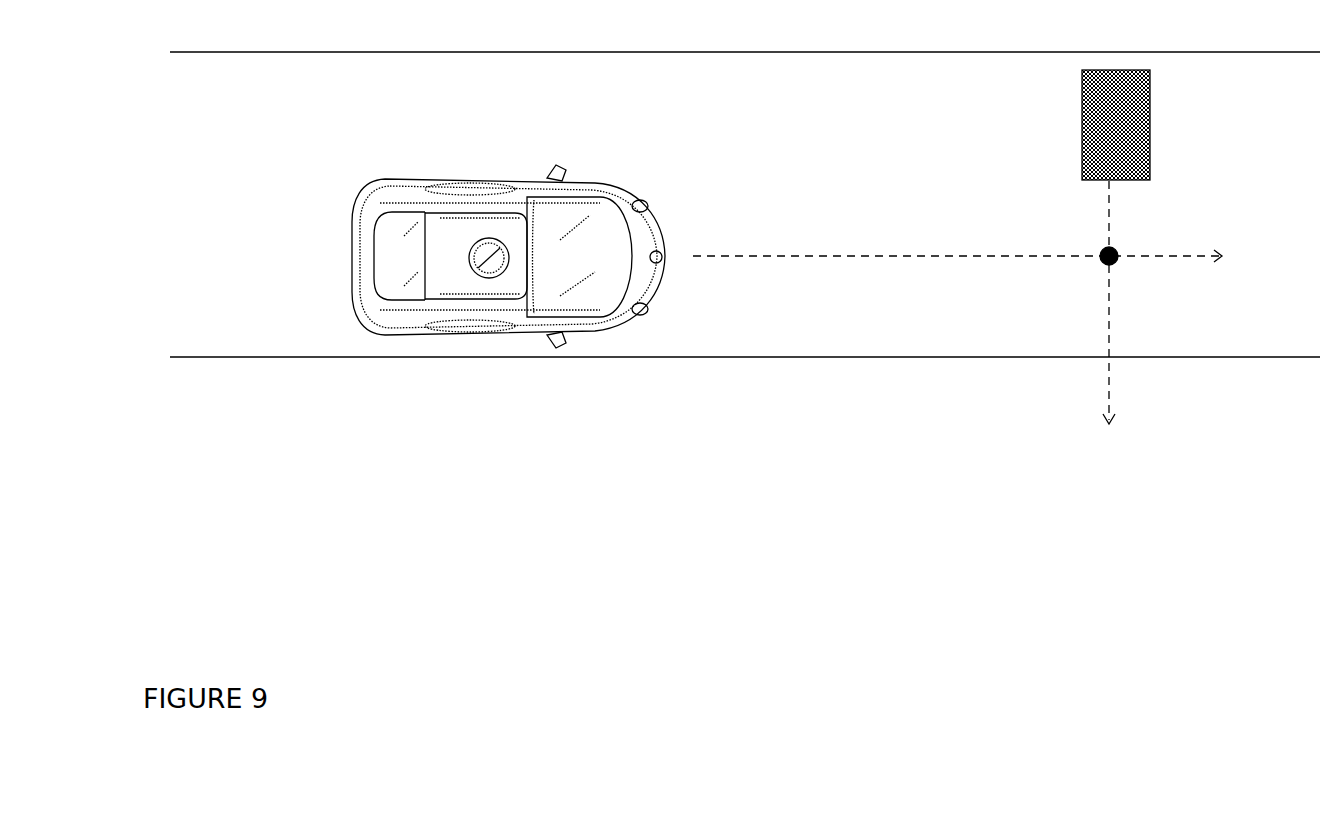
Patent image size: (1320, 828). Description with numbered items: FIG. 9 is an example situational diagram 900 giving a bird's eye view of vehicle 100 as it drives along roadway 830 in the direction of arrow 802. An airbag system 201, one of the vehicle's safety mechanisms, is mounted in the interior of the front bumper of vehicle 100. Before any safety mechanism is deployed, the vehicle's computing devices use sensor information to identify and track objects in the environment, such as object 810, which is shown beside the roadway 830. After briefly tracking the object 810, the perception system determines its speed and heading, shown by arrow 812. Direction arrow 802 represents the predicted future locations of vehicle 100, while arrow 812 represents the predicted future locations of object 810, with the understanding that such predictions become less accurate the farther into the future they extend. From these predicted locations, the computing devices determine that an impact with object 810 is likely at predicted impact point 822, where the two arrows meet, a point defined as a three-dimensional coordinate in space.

The vehicle 100 is at (350, 294).
The airbag system 201 is at (670, 256).
The direction arrow 802 is at (745, 258).
The object 810 is at (1082, 107).
The arrow 812 is at (1112, 197).
The predicted impact point 822 is at (1114, 254).
The roadway 830 is at (745, 204).
The scenario 900 is at (221, 656).